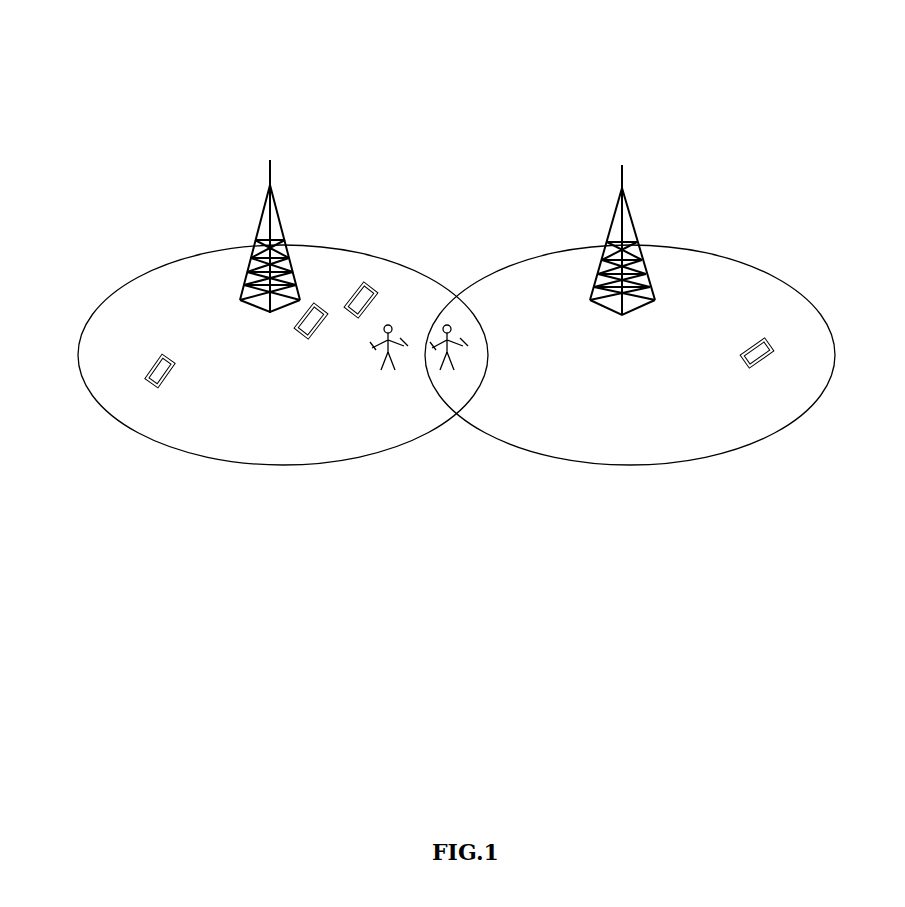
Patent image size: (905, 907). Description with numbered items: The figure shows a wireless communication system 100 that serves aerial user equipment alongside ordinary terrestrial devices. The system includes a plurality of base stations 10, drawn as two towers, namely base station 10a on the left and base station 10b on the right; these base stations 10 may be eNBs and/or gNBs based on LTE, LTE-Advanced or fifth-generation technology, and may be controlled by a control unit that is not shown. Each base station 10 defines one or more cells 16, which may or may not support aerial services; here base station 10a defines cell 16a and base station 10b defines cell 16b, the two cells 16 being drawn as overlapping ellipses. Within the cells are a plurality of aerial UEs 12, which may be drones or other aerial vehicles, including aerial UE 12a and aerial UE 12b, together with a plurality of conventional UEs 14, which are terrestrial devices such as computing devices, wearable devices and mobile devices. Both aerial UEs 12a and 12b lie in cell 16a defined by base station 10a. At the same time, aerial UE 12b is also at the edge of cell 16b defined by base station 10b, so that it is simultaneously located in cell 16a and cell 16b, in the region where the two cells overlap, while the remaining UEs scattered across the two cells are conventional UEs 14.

The wireless communication system 100 is at (648, 90).
The base stations 10 is at (275, 190).
The base station 10a is at (262, 248).
The base station 10b is at (630, 217).
The aerial UEs 12 is at (446, 419).
The aerial UE 12a is at (390, 347).
The aerial UE 12b is at (408, 350).
The conventional UEs 14 is at (148, 385).
The cells 16 is at (393, 258).
The cell 16a is at (222, 457).
The cell 16b is at (633, 453).